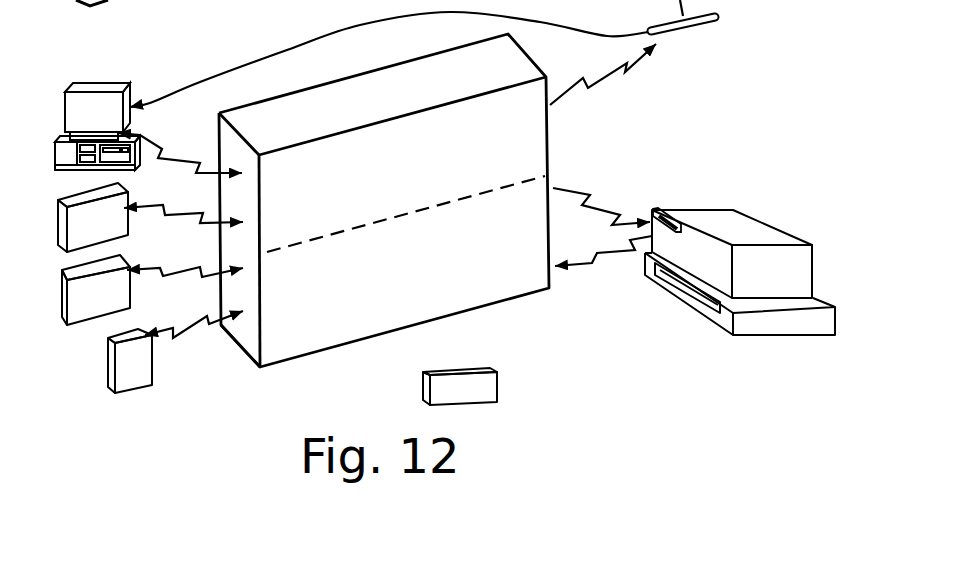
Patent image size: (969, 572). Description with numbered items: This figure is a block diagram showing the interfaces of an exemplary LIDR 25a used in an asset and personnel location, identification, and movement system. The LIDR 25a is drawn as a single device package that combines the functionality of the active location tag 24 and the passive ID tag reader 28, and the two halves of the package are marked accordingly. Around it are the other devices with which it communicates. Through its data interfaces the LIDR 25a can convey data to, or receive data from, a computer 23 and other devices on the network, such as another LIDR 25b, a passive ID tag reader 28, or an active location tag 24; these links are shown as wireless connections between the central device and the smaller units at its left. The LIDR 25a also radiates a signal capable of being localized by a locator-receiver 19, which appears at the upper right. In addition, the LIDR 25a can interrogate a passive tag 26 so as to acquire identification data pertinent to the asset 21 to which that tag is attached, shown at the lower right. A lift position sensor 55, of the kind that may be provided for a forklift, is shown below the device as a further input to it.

The locator-receiver 19 is at (708, 27).
The asset 21 is at (700, 210).
The computer 23 is at (128, 102).
The active location tag 24 is at (108, 360).
The LIDR 25a is at (552, 287).
The module 25b is at (132, 230).
The passive tag 26 is at (668, 216).
The passive ID tag reader 28 is at (133, 295).
The lift position sensor 55 is at (448, 325).